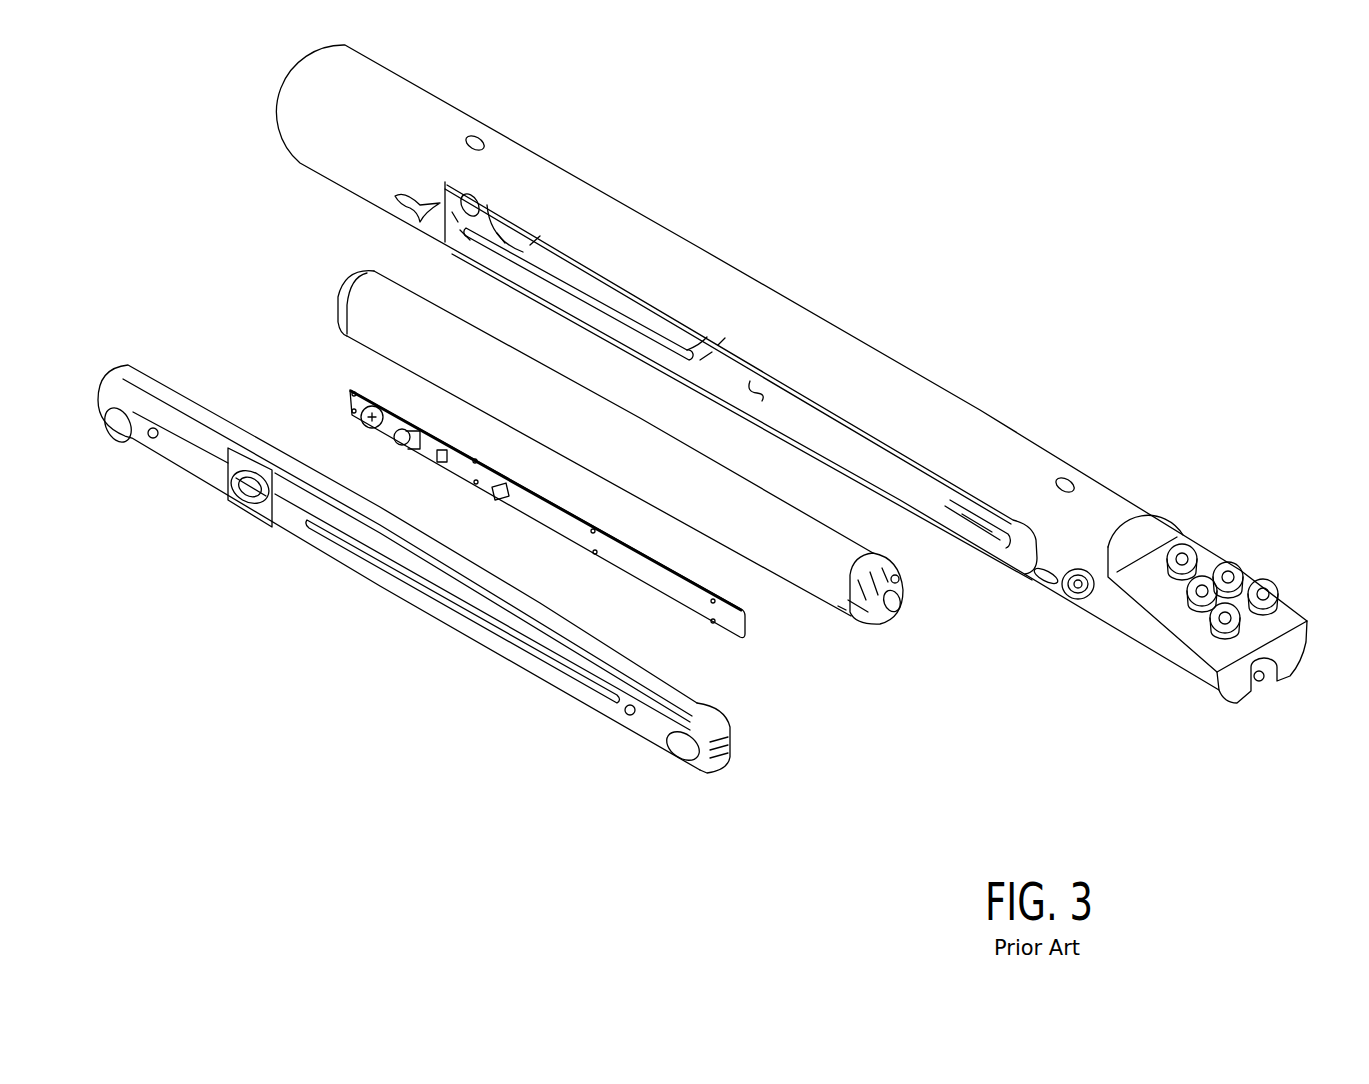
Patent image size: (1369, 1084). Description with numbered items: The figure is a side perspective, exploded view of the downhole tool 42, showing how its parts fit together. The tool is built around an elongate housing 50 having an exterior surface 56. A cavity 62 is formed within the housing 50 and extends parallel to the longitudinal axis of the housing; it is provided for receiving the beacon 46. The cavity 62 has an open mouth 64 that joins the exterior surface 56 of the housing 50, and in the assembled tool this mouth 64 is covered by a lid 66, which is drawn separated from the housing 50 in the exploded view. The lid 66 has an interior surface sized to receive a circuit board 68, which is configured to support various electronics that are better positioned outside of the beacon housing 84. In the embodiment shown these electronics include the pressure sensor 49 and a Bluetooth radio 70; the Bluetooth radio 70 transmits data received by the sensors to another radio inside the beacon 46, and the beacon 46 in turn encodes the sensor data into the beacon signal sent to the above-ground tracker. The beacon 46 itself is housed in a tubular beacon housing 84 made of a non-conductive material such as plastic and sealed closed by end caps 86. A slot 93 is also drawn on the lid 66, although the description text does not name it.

The downhole tool 42 is at (943, 203).
The elongate housing 50 is at (585, 207).
The exterior surface 56 is at (903, 398).
The open mouth 64 is at (650, 298).
The cavity 62 is at (757, 390).
The beacon housing 84 is at (690, 448).
The end caps 86 is at (343, 290).
The beacon 46 is at (838, 615).
The circuit board 68 is at (727, 628).
The pressure sensor 49 is at (408, 446).
The Bluetooth radio 70 is at (493, 498).
The lid 66 is at (507, 663).
The slot 93 is at (480, 627).